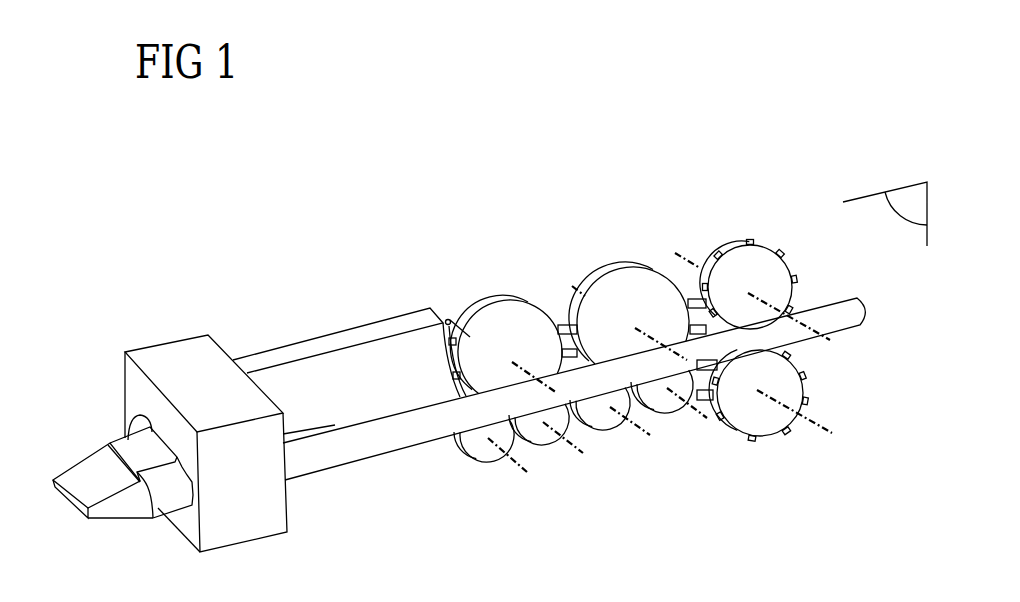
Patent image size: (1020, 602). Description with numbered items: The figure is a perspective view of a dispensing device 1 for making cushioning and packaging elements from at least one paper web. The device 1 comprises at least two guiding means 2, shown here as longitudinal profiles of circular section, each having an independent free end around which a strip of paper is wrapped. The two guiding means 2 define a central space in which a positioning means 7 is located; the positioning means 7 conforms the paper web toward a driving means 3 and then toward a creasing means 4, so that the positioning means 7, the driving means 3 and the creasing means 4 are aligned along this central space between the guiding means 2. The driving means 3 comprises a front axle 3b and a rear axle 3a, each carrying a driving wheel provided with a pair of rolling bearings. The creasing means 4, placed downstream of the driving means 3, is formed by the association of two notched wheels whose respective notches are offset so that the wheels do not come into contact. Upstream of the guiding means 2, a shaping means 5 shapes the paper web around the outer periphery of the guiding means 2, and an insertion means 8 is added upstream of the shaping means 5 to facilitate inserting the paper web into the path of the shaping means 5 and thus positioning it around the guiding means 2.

The dispensing device 1 is at (723, 75).
The guiding means 2 is at (346, 468).
The driving means 3 is at (480, 178).
The rear axle 3a is at (490, 294).
The front axle 3b is at (621, 259).
The creasing means 4 is at (748, 221).
The shaping means 5 is at (187, 354).
The positioning means 7 is at (365, 309).
The insertion means 8 is at (70, 461).